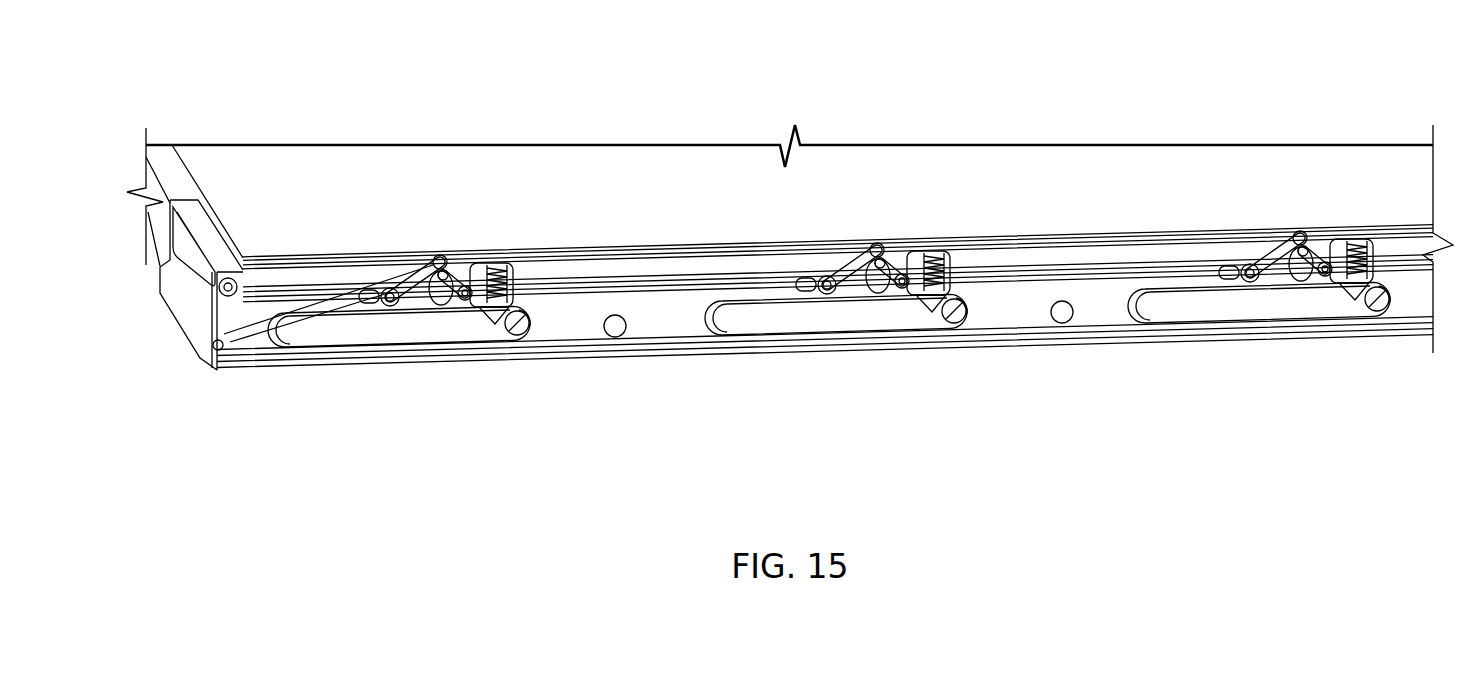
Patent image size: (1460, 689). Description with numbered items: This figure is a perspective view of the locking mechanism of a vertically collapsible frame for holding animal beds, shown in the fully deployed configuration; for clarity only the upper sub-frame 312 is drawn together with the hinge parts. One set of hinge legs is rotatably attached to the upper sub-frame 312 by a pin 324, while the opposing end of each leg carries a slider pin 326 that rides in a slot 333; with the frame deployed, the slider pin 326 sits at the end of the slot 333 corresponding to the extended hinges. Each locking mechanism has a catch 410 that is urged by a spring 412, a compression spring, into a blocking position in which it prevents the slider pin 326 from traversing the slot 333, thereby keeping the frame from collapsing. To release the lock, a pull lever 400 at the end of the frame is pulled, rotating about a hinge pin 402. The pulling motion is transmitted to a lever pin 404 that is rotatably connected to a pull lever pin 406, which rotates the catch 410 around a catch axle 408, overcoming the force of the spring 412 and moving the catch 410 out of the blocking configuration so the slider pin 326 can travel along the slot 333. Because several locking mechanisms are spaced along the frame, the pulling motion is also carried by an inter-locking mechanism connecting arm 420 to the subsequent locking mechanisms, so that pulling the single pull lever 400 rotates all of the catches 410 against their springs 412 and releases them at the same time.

The upper sub-frame 312 is at (262, 283).
The pin 324 is at (618, 336).
The slider pin 326 is at (524, 336).
The slot 333 is at (408, 332).
The pull lever 400 is at (165, 305).
The hinge pin 402 is at (223, 298).
The lever pin 404 is at (392, 306).
The pull lever pin 406 is at (443, 305).
The catch axle 408 is at (465, 301).
The catch 410 is at (495, 326).
The spring 412 is at (497, 265).
The inter-locking mechanism connecting arm 420 is at (557, 288).